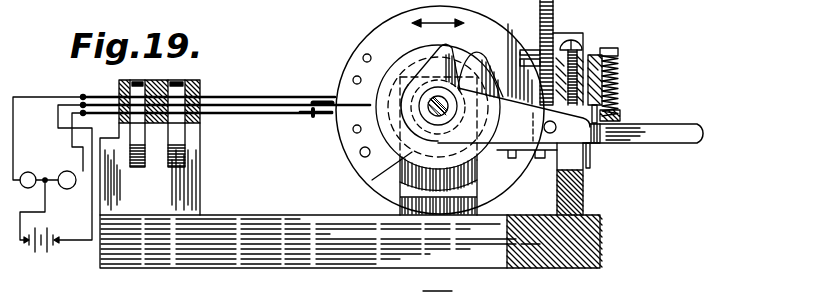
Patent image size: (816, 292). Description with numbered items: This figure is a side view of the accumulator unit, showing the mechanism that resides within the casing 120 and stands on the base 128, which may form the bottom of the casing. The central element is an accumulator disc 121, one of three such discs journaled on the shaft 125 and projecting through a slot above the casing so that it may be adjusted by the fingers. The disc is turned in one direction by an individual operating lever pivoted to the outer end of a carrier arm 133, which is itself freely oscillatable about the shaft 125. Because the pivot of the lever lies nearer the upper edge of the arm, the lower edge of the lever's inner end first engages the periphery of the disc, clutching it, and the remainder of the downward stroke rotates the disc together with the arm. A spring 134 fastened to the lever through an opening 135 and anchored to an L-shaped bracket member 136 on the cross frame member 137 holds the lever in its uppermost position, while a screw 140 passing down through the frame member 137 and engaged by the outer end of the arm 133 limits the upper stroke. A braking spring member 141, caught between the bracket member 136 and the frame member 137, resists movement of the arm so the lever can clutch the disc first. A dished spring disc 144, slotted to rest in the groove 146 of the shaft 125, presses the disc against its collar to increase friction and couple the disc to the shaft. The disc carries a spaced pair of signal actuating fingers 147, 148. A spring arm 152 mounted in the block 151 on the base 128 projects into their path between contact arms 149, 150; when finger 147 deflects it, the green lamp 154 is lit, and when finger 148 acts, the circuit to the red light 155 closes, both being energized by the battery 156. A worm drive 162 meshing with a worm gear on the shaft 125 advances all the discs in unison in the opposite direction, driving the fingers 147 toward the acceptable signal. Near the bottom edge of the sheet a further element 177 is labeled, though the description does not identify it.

The casing 120 is at (606, 235).
The accumulator disc 121 is at (400, 20).
The shaft 125 is at (432, 100).
The base 128 is at (218, 259).
The carrier arm 133 is at (497, 152).
The spring 134 is at (620, 73).
The opening 135 is at (637, 146).
The L-shaped bracket member 136 is at (618, 52).
The cross frame member 137 is at (586, 60).
The screw 140 is at (614, 100).
The spring member 141 is at (592, 163).
The spring disc 144 is at (372, 180).
The groove 146 is at (461, 77).
The signal actuating finger 147 is at (352, 66).
The signal actuating finger 148 is at (361, 154).
The contact arm 149 is at (265, 96).
The contact arm 150 is at (200, 112).
The block 151 is at (201, 127).
The spring arm 152 is at (219, 99).
The green lamp 154 is at (68, 169).
The red light 155 is at (33, 173).
The battery 156 is at (43, 252).
The worm drive 162 is at (532, 52).
The member 177 is at (452, 291).